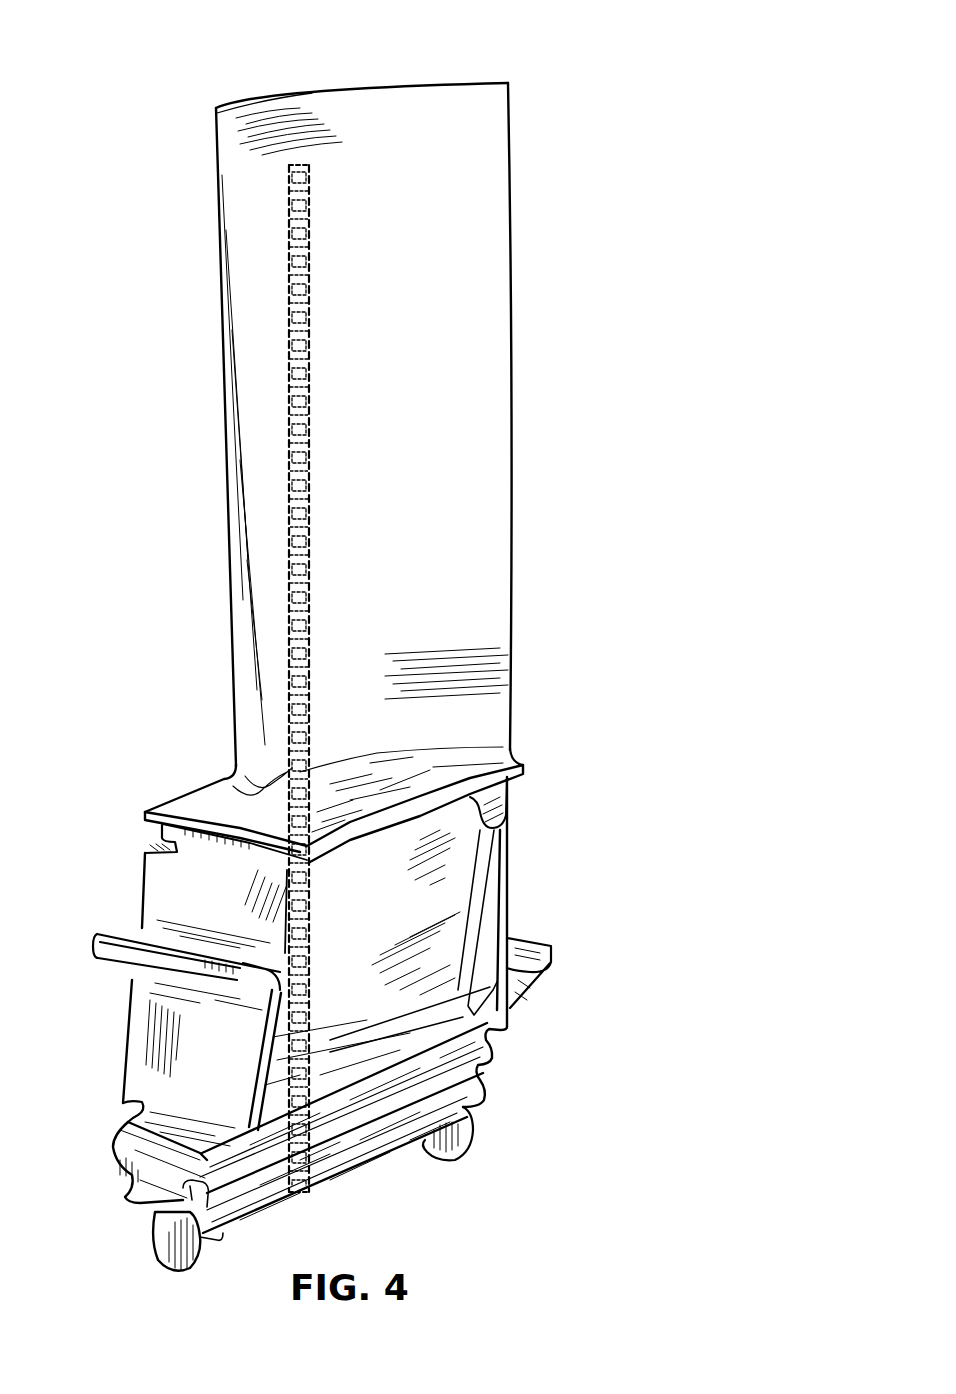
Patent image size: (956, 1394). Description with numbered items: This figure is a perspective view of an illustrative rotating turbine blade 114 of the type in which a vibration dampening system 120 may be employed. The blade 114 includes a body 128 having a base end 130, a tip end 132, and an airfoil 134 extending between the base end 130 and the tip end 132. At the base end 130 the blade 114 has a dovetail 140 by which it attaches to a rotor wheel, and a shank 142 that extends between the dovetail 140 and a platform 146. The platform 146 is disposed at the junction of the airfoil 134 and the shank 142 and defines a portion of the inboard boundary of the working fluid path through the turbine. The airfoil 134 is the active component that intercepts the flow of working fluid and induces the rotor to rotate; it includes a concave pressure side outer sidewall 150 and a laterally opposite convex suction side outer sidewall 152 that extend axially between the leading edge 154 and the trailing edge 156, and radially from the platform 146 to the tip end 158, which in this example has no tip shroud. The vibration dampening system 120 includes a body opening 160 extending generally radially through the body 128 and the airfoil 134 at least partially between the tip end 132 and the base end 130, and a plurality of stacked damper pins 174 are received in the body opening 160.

The blade 114 is at (574, 86).
The vibration dampening system 120 is at (262, 436).
The body 128 is at (556, 155).
The base end 130 is at (540, 1041).
The tip end 132 is at (314, 70).
The airfoil 134 is at (398, 501).
The dovetail 140 is at (148, 1200).
The shank 142 is at (400, 900).
The platform 146 is at (223, 830).
The pressure side outer sidewall 150 is at (412, 358).
The suction side outer sidewall 152 is at (425, 275).
The leading edge 154 is at (232, 562).
The trailing edge 156 is at (513, 488).
The tip end 158 is at (386, 113).
The body opening 160 is at (289, 697).
The damper pins 174 is at (288, 291).